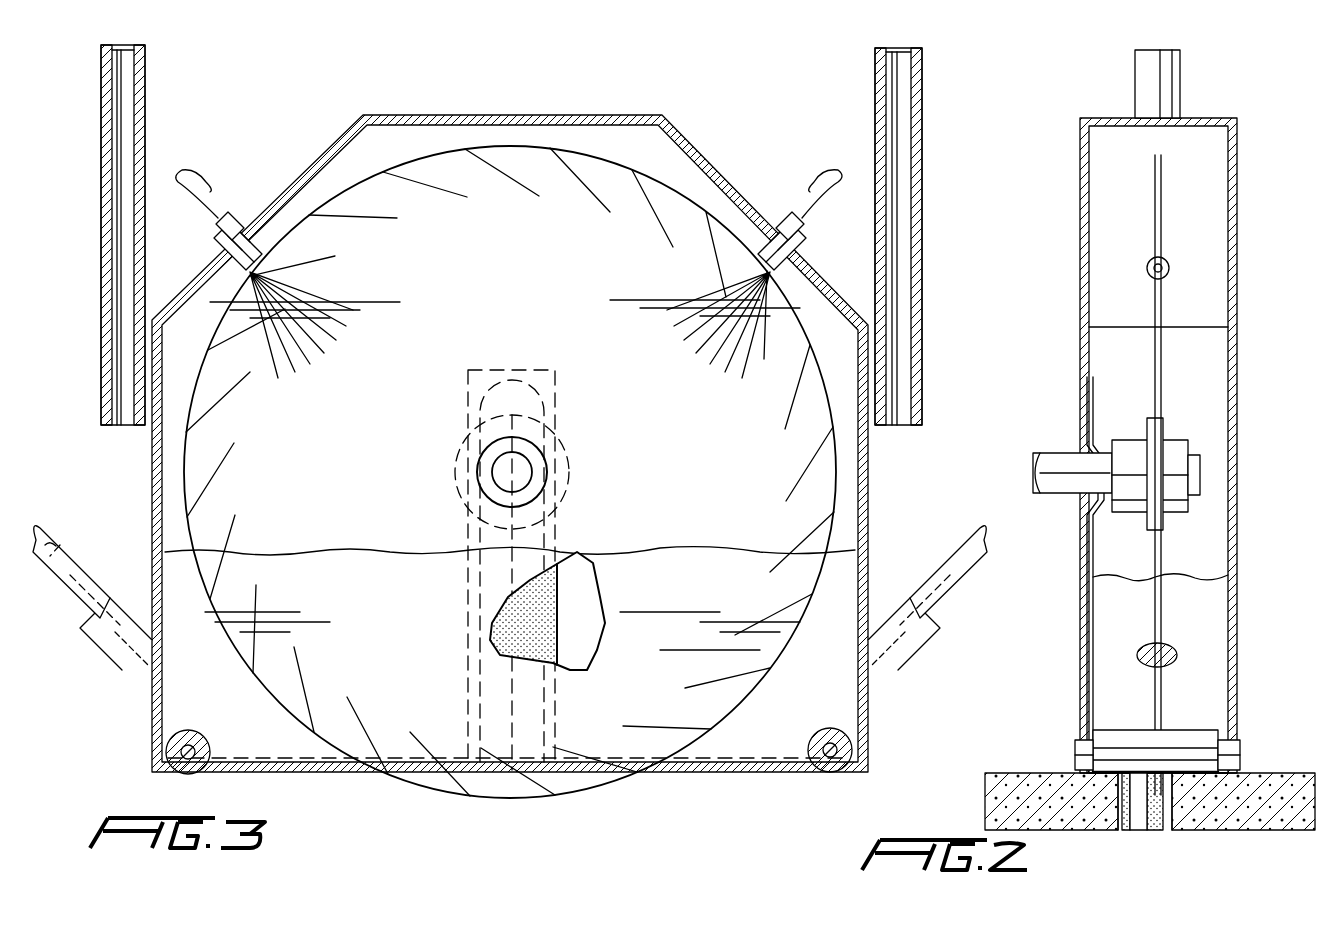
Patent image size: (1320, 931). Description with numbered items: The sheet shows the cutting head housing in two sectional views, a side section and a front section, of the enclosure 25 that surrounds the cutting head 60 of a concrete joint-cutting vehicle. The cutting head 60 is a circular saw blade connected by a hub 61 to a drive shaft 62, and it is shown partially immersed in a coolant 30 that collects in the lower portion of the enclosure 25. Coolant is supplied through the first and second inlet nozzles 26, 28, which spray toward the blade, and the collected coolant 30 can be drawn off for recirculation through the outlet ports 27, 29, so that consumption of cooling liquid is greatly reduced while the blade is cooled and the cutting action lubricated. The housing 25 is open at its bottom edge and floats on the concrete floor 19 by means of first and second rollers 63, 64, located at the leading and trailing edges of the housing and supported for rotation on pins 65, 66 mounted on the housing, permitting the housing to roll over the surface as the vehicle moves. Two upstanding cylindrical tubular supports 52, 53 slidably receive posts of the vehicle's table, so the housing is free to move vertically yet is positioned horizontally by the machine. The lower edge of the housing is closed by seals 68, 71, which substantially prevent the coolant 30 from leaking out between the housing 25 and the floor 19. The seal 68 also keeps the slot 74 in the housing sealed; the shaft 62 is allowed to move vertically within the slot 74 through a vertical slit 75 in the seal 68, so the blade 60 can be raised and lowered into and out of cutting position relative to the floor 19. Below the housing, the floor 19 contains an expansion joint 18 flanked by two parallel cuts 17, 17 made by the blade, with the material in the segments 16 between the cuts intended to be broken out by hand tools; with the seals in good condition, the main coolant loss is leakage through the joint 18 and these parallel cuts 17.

In FIG. 2, the segments 16 is at (1127, 832).
In FIG. 2, the parallel cuts 17 is at (1118, 838).
In FIG. 2, the joint 18 is at (1140, 832).
In FIG. 2, the floor 19 is at (1020, 770).
In FIG. 2, the enclosure 25 is at (1237, 210).
In FIG. 3, the first inlet nozzle 26 is at (800, 225).
In FIG. 2, the first inlet nozzle 26 is at (1180, 82).
In FIG. 3, the outlet port 27 is at (905, 640).
In FIG. 3, the second inlet nozzle 28 is at (235, 228).
In FIG. 3, the outlet port 29 is at (135, 665).
In FIG. 3, the coolant 30 is at (355, 550).
In FIG. 2, the coolant 30 is at (1206, 614).
In FIG. 3, the tubular support 52 is at (922, 235).
In FIG. 3, the tubular support 53 is at (101, 170).
In FIG. 3, the cutting head 60 is at (526, 240).
In FIG. 2, the cutting head 60 is at (1163, 388).
In FIG. 2, the hub 61 is at (1175, 440).
In FIG. 3, the drive shaft 62 is at (545, 470).
In FIG. 2, the drive shaft 62 is at (1055, 455).
In FIG. 3, the first roller 63 is at (828, 772).
In FIG. 2, the first roller 63 is at (1195, 730).
In FIG. 3, the second roller 64 is at (195, 772).
In FIG. 3, the pin 65 is at (806, 753).
In FIG. 2, the pin 65 is at (1240, 752).
In FIG. 3, the pin 66 is at (205, 753).
In FIG. 3, the seal 68 is at (552, 397).
In FIG. 2, the seal 68 is at (1084, 340).
In FIG. 2, the seal 71 is at (1235, 770).
In FIG. 3, the slot 74 is at (528, 388).
In FIG. 3, the vertical slit 75 is at (520, 545).